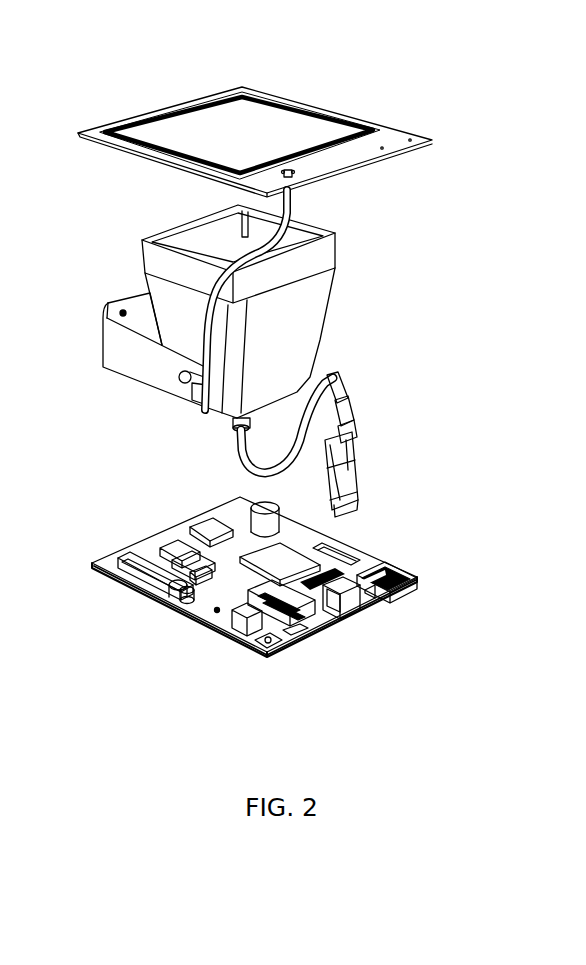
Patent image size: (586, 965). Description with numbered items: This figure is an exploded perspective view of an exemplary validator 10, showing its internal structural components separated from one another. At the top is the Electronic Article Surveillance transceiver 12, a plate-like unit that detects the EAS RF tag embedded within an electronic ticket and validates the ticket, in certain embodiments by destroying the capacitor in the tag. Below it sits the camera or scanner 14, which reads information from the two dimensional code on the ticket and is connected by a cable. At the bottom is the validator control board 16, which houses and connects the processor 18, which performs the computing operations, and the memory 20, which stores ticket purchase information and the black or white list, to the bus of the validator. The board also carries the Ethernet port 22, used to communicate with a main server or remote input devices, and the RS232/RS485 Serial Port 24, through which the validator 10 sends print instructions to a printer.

The validator 10 is at (128, 105).
The EAS transceiver 12 is at (337, 113).
The camera or scanner 14 is at (320, 340).
The validator control board 16 is at (195, 622).
The processor 18 is at (330, 617).
The memory 20 is at (193, 525).
The Ethernet port 22 is at (270, 655).
The RS232/RS485 Serial Port 24 is at (387, 567).